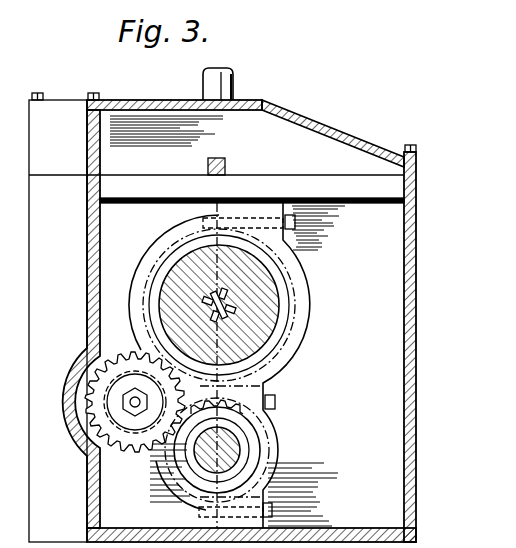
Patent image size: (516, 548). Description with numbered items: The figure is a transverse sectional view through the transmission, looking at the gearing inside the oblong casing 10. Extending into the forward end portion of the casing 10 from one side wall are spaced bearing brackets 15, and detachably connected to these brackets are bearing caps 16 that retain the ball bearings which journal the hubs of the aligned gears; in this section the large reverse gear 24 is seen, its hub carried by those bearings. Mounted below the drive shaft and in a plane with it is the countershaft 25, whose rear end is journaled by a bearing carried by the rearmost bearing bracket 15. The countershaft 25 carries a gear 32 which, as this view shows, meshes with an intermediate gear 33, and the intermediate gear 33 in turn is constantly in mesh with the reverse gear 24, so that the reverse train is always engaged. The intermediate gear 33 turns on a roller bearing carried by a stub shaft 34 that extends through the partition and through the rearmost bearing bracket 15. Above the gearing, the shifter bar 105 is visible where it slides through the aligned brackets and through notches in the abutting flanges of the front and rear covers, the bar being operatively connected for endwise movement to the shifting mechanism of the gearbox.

The casing 10 is at (418, 437).
The shifter bar 105 is at (227, 167).
The bearing bracket 15 is at (204, 305).
The bearing cap 16 is at (308, 278).
The reverse gear 24 is at (262, 345).
The countershaft 25 is at (237, 443).
The gear 32 is at (250, 455).
The intermediate gear 33 is at (137, 446).
The stub shaft 34 is at (133, 405).